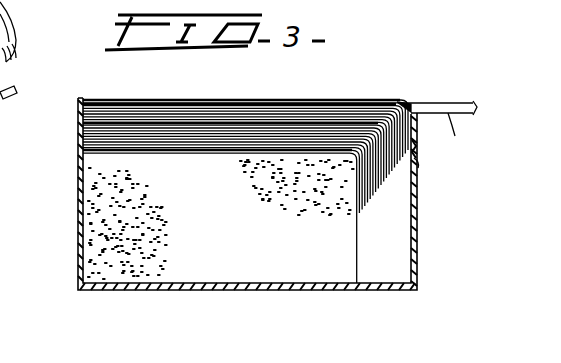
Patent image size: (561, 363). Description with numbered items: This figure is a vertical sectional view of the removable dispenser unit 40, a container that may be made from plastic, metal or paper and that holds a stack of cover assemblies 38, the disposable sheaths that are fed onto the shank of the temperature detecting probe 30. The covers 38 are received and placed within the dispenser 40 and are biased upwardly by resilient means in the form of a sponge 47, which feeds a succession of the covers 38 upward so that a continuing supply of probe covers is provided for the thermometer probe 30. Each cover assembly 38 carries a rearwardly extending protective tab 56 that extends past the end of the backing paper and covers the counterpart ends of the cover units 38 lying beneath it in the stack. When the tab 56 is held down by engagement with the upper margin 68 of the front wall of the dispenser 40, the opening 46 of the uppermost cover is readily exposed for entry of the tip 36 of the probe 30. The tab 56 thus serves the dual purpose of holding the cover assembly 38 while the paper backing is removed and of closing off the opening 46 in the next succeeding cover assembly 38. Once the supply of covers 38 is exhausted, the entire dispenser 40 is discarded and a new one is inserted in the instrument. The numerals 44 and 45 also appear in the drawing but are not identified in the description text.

The temperature detecting probe 30 is at (449, 135).
The tip 36 is at (14, 96).
The cover assembly 38 is at (330, 99).
The dispenser unit 40 is at (72, 208).
The coiled tubing 44 is at (18, 49).
The end wall 45 is at (395, 219).
The opening 46 is at (443, 101).
The sponge 47 is at (242, 262).
The protective tab 56 is at (427, 120).
The upper margin 68 is at (415, 163).